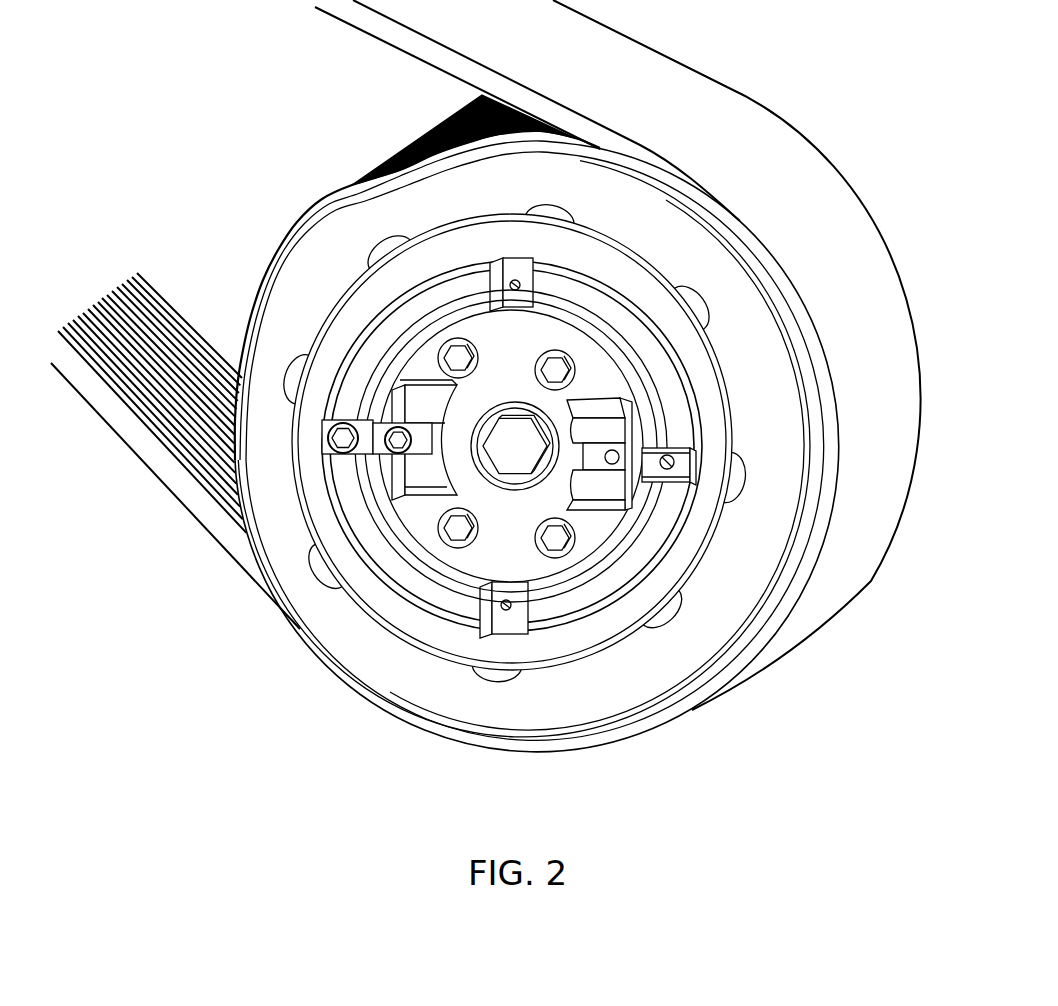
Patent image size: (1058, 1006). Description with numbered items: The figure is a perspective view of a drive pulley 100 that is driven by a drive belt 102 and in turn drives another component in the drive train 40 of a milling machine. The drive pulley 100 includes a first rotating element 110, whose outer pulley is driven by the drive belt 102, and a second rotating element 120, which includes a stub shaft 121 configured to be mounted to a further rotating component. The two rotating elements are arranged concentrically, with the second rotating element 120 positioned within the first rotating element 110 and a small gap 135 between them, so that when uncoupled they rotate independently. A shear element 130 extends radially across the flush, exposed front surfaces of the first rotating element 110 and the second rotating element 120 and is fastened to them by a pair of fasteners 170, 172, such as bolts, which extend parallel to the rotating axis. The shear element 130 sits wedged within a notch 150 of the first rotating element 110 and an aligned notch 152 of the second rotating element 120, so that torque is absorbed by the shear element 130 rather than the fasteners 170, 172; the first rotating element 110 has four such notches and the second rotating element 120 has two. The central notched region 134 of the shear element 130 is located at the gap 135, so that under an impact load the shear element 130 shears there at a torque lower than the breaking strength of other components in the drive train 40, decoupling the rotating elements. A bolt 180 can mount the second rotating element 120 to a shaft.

The drive train 40 is at (708, 52).
The drive pulley 100 is at (855, 157).
The drive belt 102 is at (853, 253).
The first rotating element 110 is at (410, 673).
The second rotating element 120 is at (593, 513).
The stub shaft 121 is at (407, 477).
The shear element 130 is at (345, 420).
The central notched region 134 is at (360, 420).
The gap 135 is at (393, 430).
The notch 150 is at (683, 483).
The notch 152 is at (614, 466).
The fastener 170 is at (330, 457).
The fastener 172 is at (385, 457).
The bolt 180 is at (513, 447).